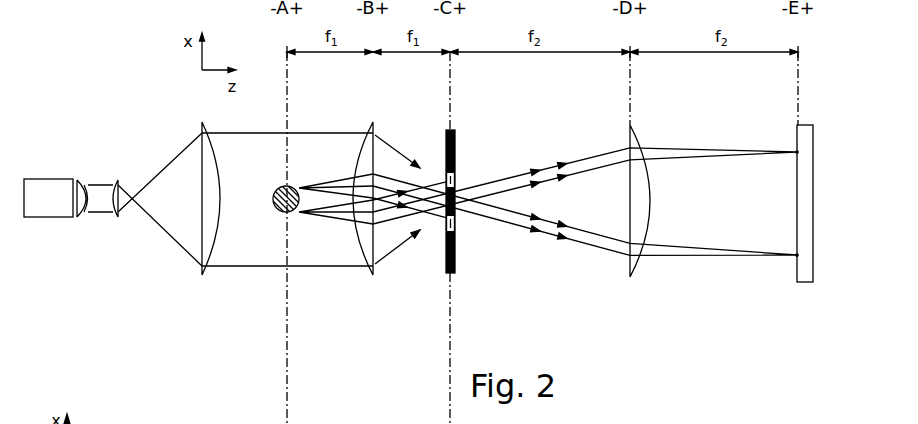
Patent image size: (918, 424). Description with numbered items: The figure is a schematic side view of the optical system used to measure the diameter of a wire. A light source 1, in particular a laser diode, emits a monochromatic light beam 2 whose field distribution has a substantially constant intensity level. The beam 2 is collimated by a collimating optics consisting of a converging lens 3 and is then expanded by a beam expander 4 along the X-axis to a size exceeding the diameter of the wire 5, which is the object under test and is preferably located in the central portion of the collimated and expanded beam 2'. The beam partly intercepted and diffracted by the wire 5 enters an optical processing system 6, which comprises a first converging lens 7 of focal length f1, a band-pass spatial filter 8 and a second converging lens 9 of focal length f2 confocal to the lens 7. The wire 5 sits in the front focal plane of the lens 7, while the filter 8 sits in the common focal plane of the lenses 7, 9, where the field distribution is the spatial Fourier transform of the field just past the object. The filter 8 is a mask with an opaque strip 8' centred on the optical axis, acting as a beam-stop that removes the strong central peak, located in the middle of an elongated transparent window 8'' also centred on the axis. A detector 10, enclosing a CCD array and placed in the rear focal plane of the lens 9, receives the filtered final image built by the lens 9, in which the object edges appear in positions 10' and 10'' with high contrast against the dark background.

The light source 1 is at (47, 188).
The light beam 2 is at (91, 166).
The converging lens 3 is at (84, 214).
The beam expander 4 is at (197, 288).
The collimated and expanded beam 2' is at (217, 226).
The wire 5 is at (276, 208).
The first converging lens 7 is at (372, 278).
The band-pass spatial filter 8 is at (426, 216).
The opaque strip 8' is at (500, 163).
The transparent window 8'' is at (472, 153).
The optical processing system 6 is at (627, 278).
The second converging lens 9 is at (632, 278).
The detector 10 is at (792, 220).
The object edge position 10' is at (759, 134).
The object edge position 10'' is at (766, 237).